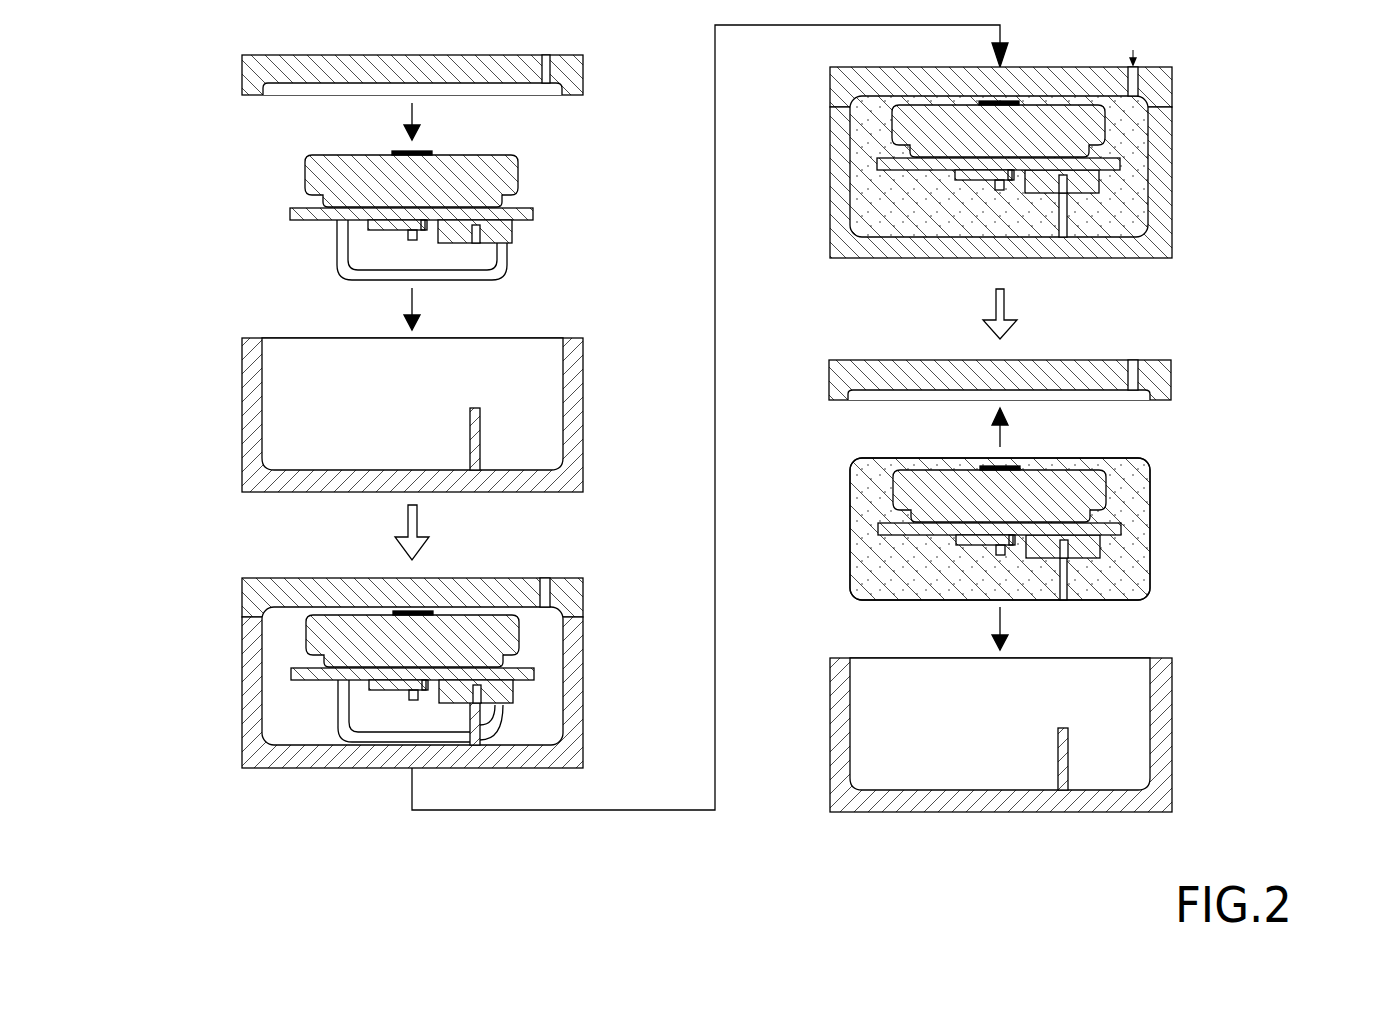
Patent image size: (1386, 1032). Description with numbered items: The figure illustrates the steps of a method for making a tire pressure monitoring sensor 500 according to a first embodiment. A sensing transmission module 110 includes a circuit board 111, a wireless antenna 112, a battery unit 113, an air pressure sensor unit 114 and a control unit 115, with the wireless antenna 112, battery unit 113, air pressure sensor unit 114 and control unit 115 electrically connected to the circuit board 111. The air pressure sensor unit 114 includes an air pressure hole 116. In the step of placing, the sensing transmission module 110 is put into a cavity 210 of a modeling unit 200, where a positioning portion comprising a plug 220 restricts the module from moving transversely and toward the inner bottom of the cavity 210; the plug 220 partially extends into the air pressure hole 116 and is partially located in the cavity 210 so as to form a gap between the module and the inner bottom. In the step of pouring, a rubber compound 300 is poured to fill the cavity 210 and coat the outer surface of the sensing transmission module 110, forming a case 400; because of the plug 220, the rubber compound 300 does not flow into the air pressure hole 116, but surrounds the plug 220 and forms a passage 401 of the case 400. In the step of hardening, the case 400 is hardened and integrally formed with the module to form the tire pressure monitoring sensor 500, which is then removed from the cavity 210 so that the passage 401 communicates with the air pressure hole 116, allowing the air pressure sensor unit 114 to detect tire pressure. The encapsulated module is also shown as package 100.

The electronic package 100 is at (951, 371).
The sensing transmission module 110 is at (701, 423).
The circuit board 111 is at (355, 424).
The wireless antenna 112 is at (342, 476).
The battery unit 113 is at (348, 398).
The air pressure sensor unit 114 is at (842, 412).
The control unit 115 is at (332, 460).
The air pressure hole 116 is at (859, 446).
The modeling unit 200 is at (673, 501).
The cavity 210 is at (359, 676).
The plug 220 is at (793, 488).
The rubber compound 300 is at (1094, 162).
The case 400 is at (1069, 526).
The passage 401 is at (1143, 411).
The tire pressure monitoring sensor 500 is at (1069, 529).